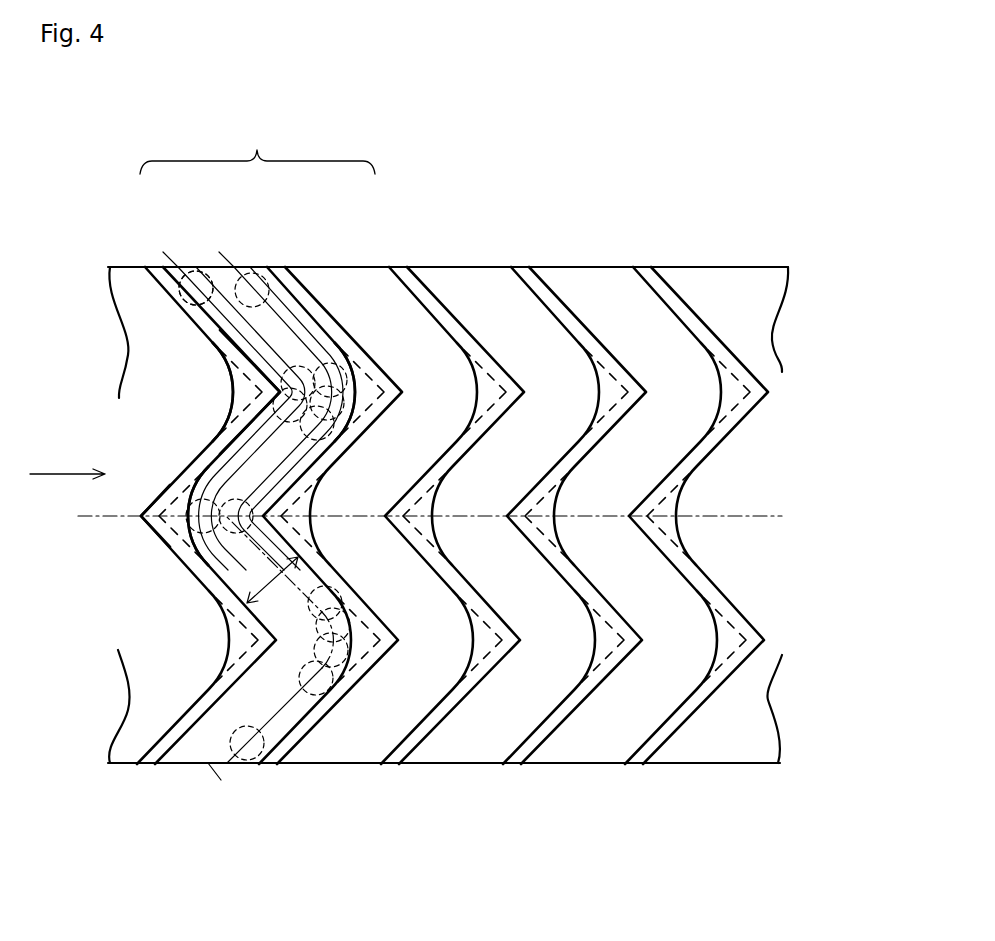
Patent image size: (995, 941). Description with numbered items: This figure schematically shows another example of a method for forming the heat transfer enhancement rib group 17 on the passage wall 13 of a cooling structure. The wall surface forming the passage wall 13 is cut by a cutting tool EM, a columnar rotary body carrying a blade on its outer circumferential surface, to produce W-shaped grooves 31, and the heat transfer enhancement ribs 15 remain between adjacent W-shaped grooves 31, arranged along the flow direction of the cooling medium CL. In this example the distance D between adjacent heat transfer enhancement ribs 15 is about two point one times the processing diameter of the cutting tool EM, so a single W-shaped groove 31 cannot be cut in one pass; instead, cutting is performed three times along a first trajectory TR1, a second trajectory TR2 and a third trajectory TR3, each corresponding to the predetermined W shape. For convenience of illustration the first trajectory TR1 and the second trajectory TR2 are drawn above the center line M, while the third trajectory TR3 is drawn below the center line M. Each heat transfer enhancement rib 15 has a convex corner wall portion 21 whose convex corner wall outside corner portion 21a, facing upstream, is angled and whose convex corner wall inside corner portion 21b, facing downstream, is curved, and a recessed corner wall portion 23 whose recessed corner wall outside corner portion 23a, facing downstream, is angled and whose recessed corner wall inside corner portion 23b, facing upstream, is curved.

The passage wall 13 is at (722, 290).
The heat transfer enhancement rib 15 is at (156, 267).
The heat transfer enhancement rib group 17 is at (257, 147).
The convex corner wall portion 21 is at (151, 504).
The convex corner wall outside corner portion 21a is at (140, 520).
The convex corner wall inside corner portion 21b is at (203, 545).
The recessed corner wall portion 23 is at (283, 389).
The recessed corner wall outside corner portion 23a is at (336, 385).
The recessed corner wall inside corner portion 23b is at (228, 392).
The W-shaped groove 31 is at (187, 764).
The first trajectory TR1 is at (196, 242).
The second trajectory TR2 is at (236, 258).
The third trajectory TR3 is at (230, 777).
The cutting tool EM is at (184, 300).
The distance between adjacent heat transfer enhancement ribs D is at (272, 569).
The center line M is at (718, 515).
The cooling medium CL is at (62, 468).